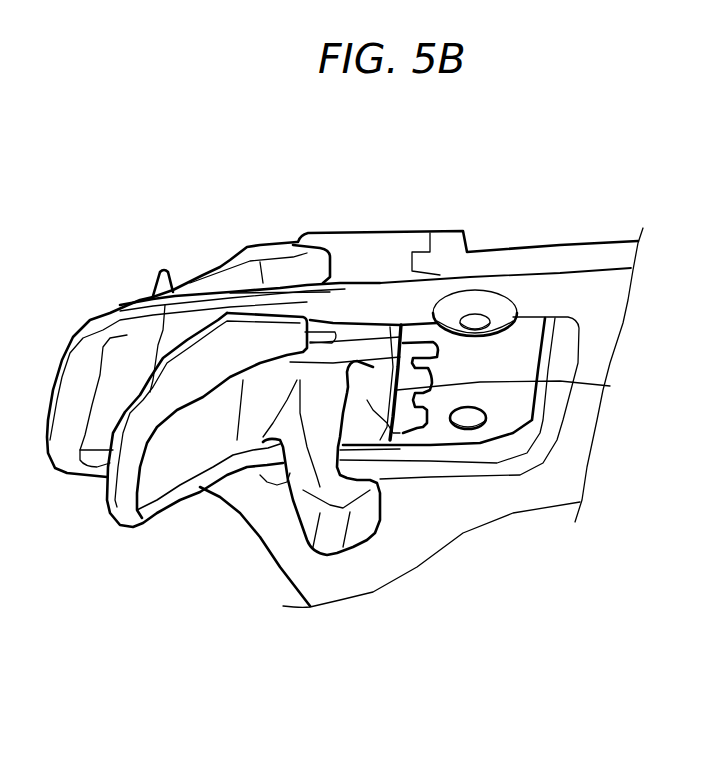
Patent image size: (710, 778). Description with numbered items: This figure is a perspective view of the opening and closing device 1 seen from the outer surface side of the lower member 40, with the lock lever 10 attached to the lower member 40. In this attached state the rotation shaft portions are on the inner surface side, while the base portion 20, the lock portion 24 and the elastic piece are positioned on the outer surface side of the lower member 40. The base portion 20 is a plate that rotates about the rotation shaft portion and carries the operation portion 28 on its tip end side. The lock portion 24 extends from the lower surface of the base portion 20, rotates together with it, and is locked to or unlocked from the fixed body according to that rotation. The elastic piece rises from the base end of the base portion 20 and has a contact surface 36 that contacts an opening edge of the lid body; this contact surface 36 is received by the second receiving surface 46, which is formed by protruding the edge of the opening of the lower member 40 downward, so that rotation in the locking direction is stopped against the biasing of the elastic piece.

The opening and closing device 1 is at (360, 658).
The lock lever 10 is at (226, 365).
The base portion 20 is at (183, 447).
The lock portion 24 is at (327, 487).
The operation portion 28 is at (127, 482).
The contact surface 36 is at (377, 440).
The lower member 40 is at (514, 243).
The second receiving surface 46 is at (610, 386).